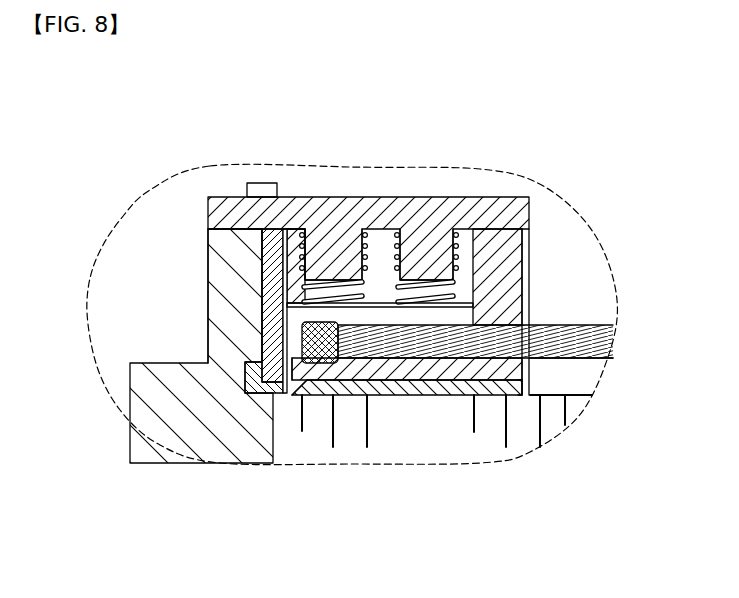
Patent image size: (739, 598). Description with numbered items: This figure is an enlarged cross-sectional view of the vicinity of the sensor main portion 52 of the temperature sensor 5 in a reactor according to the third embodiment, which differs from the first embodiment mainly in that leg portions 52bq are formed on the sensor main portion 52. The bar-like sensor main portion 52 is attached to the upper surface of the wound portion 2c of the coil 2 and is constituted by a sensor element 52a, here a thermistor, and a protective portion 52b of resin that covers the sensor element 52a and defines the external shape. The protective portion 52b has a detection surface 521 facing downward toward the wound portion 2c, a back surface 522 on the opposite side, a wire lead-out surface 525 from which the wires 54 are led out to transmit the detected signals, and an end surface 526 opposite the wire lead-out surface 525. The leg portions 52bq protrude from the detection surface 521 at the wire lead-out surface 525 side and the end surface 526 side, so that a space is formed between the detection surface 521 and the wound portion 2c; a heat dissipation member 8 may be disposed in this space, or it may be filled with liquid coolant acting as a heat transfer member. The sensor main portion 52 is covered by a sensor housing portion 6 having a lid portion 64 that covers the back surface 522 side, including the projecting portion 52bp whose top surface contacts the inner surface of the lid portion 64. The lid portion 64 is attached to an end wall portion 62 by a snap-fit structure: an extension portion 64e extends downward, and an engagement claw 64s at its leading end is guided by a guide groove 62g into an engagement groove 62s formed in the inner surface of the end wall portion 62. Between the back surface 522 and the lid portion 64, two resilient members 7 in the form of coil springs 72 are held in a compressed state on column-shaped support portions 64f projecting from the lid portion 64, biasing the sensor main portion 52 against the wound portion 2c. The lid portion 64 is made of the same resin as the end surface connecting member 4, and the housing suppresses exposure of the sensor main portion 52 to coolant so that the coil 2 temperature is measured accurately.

The coil 2 is at (623, 377).
The wound portion 2c is at (555, 394).
The end surface connecting member 4 is at (140, 431).
The temperature sensor 5 is at (590, 322).
The sensor housing portion 6 is at (196, 224).
The resilient member 7 is at (396, 192).
The heat dissipation member 8 is at (482, 396).
The sensor main portion 52 is at (407, 473).
The sensor element 52a is at (323, 363).
The protective portion 52b is at (387, 372).
The projecting portion 52bp is at (524, 248).
The leg portion 52bq is at (291, 395).
The wire 54 is at (541, 324).
The end wall portion 62 is at (206, 287).
The guide groove 62g is at (297, 229).
The engagement groove 62s is at (253, 394).
The lid portion 64 is at (368, 191).
The extension portion 64e is at (270, 289).
The support portion 64f is at (326, 243).
The engagement claw 64s is at (284, 394).
The coil spring 72 is at (303, 255).
The detection surface 521 is at (437, 396).
The back surface 522 is at (373, 303).
The wire lead-out surface 525 is at (548, 396).
The end surface 526 is at (268, 327).